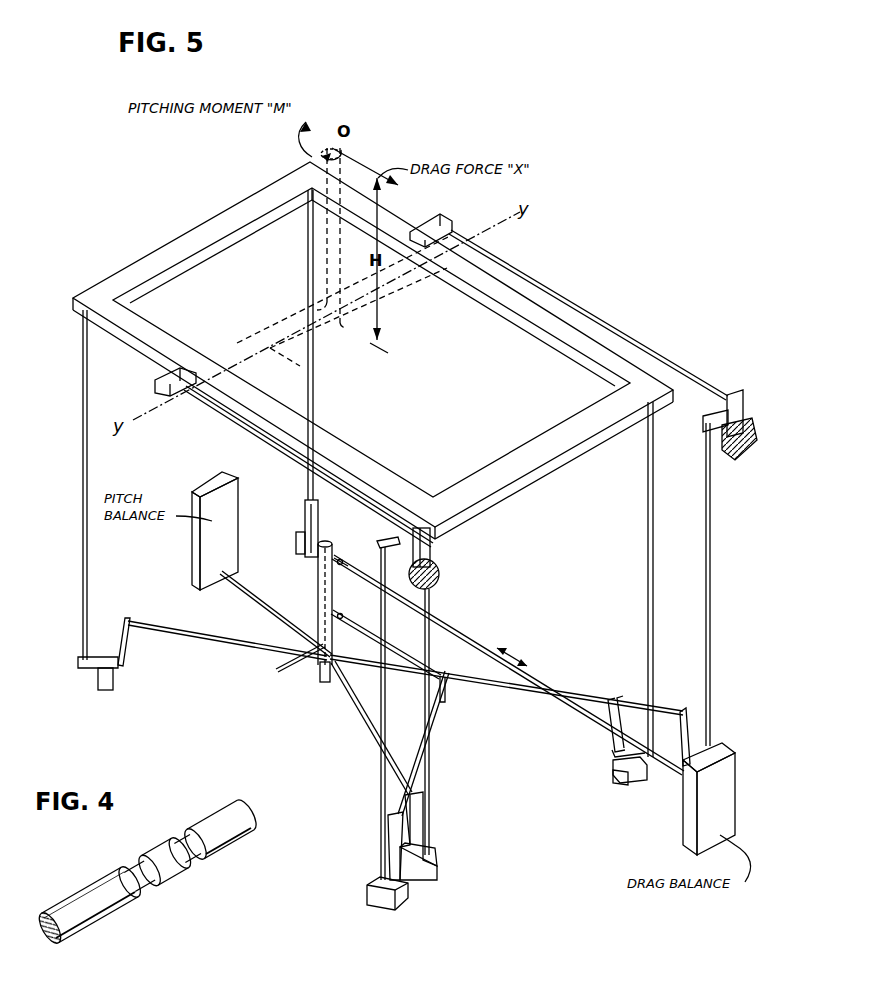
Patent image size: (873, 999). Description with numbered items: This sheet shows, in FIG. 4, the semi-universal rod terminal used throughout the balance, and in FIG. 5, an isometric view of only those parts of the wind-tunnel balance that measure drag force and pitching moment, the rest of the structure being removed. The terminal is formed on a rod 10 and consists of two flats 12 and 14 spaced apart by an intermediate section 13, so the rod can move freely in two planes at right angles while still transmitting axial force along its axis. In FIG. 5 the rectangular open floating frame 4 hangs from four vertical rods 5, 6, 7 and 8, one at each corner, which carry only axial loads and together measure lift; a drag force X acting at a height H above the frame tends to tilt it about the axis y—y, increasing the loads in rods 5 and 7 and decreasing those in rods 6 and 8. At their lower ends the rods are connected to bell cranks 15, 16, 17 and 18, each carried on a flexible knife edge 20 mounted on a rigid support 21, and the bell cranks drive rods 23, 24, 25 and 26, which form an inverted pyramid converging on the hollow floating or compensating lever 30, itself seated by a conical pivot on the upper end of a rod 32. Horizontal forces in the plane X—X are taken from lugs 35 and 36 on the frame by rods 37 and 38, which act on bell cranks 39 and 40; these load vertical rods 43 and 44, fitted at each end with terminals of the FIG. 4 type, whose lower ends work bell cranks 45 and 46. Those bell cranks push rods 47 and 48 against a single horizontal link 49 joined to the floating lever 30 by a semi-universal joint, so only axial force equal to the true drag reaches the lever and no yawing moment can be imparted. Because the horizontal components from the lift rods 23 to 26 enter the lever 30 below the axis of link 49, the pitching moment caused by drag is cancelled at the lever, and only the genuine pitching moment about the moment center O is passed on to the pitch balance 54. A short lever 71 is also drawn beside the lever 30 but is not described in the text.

In FIG. 5, the floating frame 4 is at (498, 466).
In FIG. 5, the vertical rod 5 is at (82, 613).
In FIG. 5, the vertical rod 6 is at (438, 542).
In FIG. 5, the vertical rod 7 is at (314, 396).
In FIG. 5, the vertical rod 8 is at (647, 550).
In FIG. 4, the shaft 10 is at (83, 888).
In FIG. 4, the flat 12 is at (132, 864).
In FIG. 4, the intermediate section 13 is at (166, 848).
In FIG. 4, the flat 14 is at (195, 860).
In FIG. 5, the bell crank 15 is at (116, 644).
In FIG. 5, the bell crank 16 is at (437, 862).
In FIG. 5, the bell crank 17 is at (318, 523).
In FIG. 5, the bell crank 18 is at (610, 747).
In FIG. 5, the knife edge 20 is at (298, 546).
In FIG. 5, the rigid support 21 is at (307, 565).
In FIG. 5, the rod 23 is at (220, 640).
In FIG. 5, the rod 24 is at (392, 760).
In FIG. 5, the rod 25 is at (331, 543).
In FIG. 5, the rod 26 is at (389, 680).
In FIG. 5, the floating lever 30 is at (333, 604).
In FIG. 5, the rod 32 is at (323, 680).
In FIG. 5, the lug 35 is at (153, 380).
In FIG. 5, the lug 36 is at (446, 228).
In FIG. 5, the rod 37 is at (246, 437).
In FIG. 5, the rod 38 is at (566, 303).
In FIG. 5, the bell crank 39 is at (384, 542).
In FIG. 5, the bell crank 40 is at (738, 398).
In FIG. 5, the vertical rod 43 is at (388, 625).
In FIG. 5, the vertical rod 44 is at (705, 542).
In FIG. 5, the bell crank 45 is at (370, 884).
In FIG. 5, the bell crank 46 is at (620, 696).
In FIG. 5, the rod 47 is at (447, 730).
In FIG. 5, the rod 48 is at (498, 694).
In FIG. 5, the horizontally extending link 49 is at (366, 633).
In FIG. 5, the pitch balance 54 is at (232, 493).
In FIG. 5, the short lever 71 is at (285, 673).